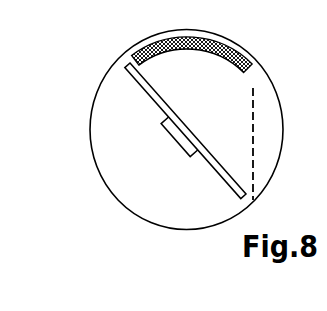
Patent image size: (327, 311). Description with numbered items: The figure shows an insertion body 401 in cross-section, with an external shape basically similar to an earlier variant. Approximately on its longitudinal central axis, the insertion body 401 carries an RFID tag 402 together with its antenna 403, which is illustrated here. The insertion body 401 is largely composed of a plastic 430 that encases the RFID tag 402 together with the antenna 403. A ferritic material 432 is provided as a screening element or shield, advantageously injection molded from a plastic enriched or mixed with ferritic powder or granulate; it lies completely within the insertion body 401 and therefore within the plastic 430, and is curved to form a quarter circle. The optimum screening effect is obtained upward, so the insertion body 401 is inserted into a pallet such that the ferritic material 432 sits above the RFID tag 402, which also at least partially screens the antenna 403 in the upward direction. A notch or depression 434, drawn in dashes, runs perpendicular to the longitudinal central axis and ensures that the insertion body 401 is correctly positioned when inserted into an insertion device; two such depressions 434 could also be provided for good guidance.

The insertion body 401 is at (82, 241).
The RFID tag 402 is at (176, 145).
The antenna 403 is at (168, 104).
The plastic 430 is at (188, 172).
The ferritic material 432 is at (158, 37).
The notch or depression 434 is at (257, 85).